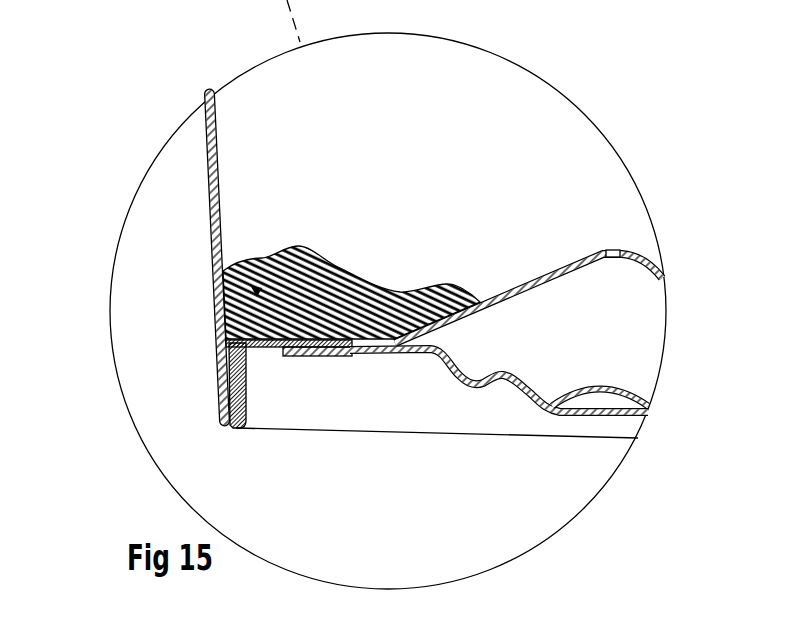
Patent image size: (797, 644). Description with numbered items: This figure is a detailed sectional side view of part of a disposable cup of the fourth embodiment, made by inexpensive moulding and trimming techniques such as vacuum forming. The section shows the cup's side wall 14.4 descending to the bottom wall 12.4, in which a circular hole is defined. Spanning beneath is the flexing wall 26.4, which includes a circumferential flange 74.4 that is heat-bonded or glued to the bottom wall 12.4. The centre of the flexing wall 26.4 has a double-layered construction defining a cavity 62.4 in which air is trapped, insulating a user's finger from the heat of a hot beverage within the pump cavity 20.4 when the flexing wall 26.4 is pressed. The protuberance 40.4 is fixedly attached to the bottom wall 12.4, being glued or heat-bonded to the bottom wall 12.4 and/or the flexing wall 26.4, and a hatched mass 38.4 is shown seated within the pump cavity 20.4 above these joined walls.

The side wall 14.4 is at (208, 170).
The sealing compound / foam mass 38.4 is at (221, 272).
The bottom wall 12.4 is at (220, 387).
The circumferential flange 74.4 is at (306, 356).
The flexing wall 26.4 is at (483, 387).
The cavity 62.4 is at (610, 397).
The protuberance 40.4 is at (643, 265).
The pump cavity 20.4 is at (600, 349).